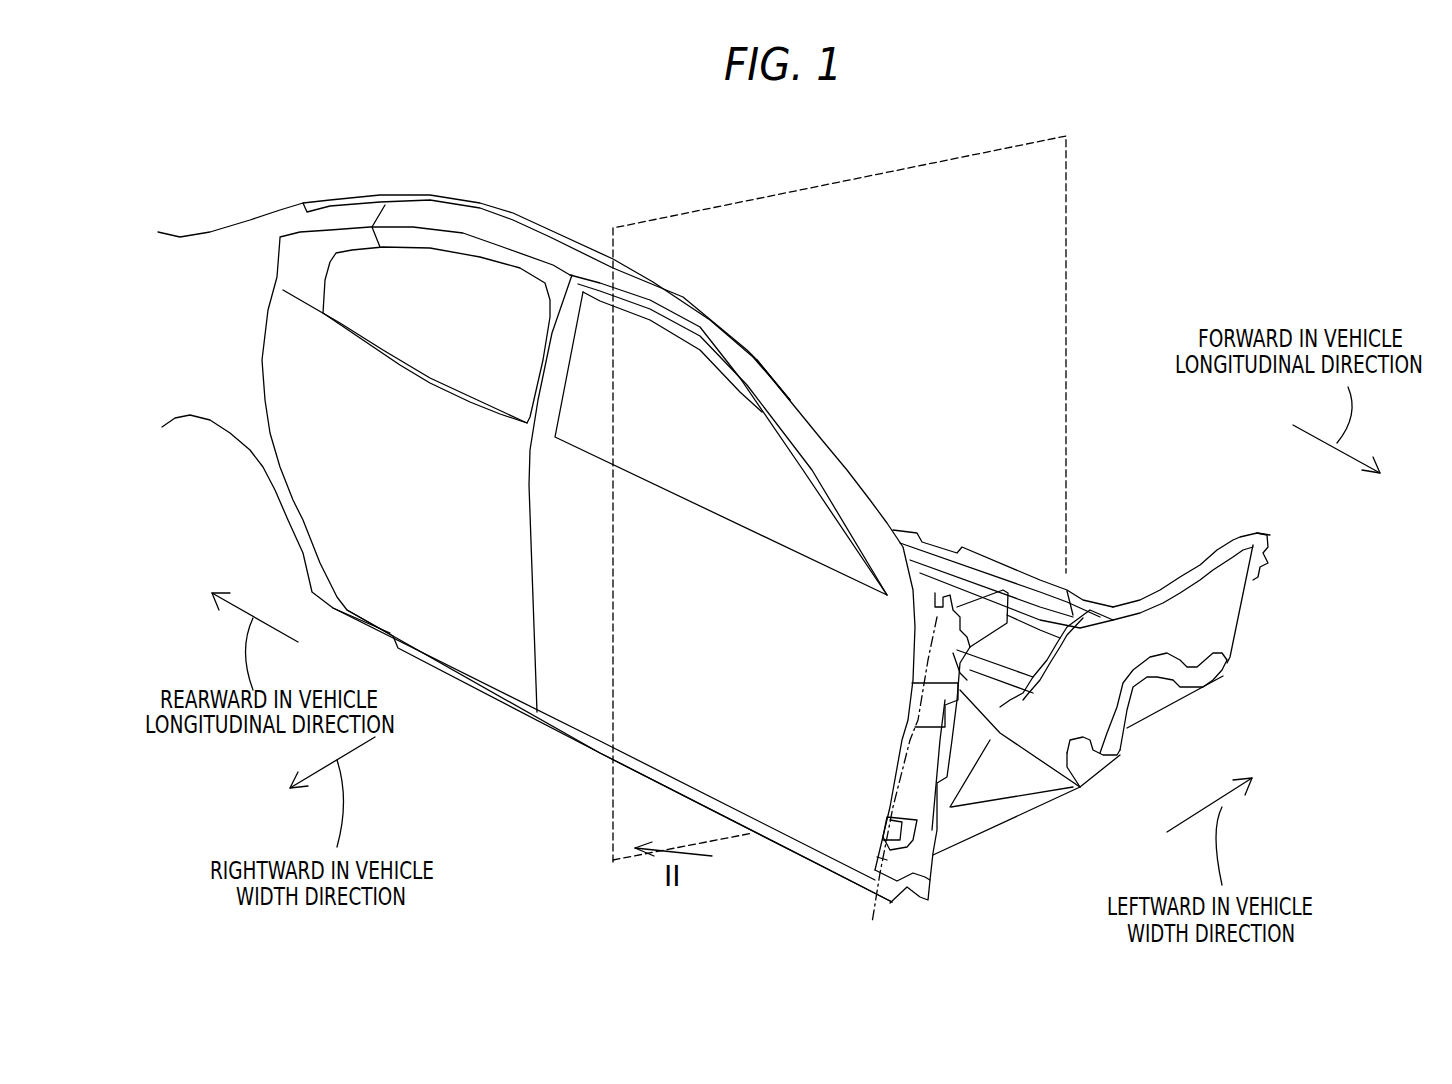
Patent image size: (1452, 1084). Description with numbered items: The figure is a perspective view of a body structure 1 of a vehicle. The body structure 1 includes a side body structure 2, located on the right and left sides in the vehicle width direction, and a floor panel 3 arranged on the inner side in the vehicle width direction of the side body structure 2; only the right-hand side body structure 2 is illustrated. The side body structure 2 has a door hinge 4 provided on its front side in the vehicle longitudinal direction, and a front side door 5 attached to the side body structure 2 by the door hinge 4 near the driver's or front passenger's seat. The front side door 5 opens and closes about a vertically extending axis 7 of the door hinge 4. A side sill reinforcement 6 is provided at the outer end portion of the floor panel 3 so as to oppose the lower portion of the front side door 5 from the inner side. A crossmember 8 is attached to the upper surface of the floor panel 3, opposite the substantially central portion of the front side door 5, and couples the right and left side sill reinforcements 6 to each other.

The body structure 1 is at (536, 548).
The side body structure 2 is at (558, 763).
The floor panel 3 is at (941, 546).
The door hinge 4 is at (893, 853).
The front side door 5 is at (783, 430).
The side sill reinforcement 6 is at (733, 837).
The axis 7 is at (957, 530).
The crossmember 8 is at (1003, 590).